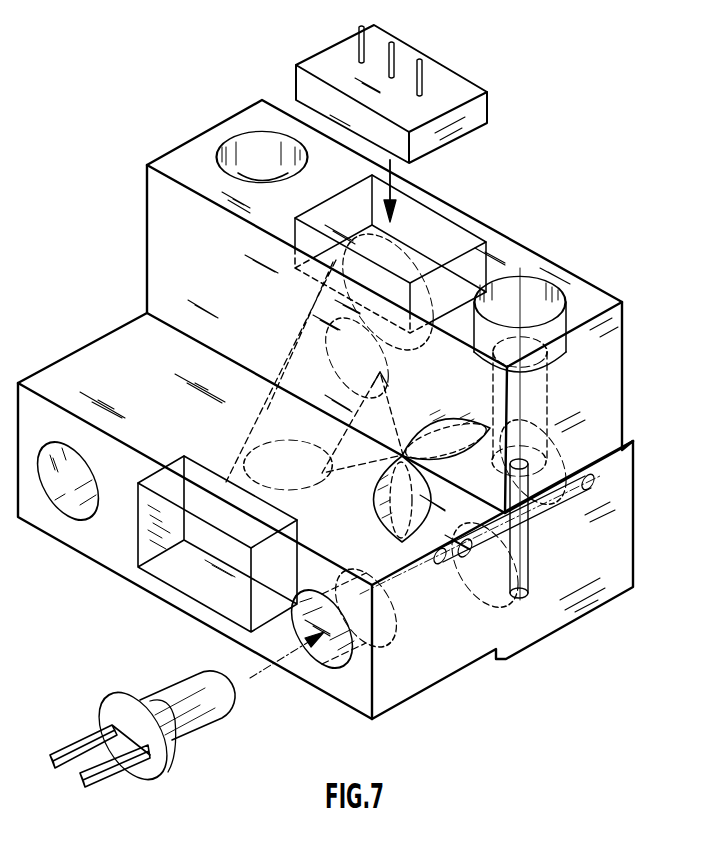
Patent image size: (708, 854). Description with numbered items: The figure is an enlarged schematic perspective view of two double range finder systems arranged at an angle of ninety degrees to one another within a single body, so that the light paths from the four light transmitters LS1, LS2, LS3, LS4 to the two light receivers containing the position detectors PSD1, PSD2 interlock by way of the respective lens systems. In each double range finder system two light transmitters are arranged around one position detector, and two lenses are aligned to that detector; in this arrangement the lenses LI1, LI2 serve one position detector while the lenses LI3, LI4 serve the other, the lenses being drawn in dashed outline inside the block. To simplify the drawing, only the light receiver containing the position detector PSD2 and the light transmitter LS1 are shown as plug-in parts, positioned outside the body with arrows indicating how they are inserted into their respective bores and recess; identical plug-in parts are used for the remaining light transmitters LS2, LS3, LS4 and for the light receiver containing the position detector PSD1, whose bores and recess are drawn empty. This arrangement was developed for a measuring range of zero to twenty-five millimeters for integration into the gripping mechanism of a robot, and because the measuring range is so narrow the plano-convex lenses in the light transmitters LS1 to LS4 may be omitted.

The light transmitter LS1 is at (183, 737).
The light transmitter LS2 is at (72, 490).
The light transmitter LS3 is at (541, 291).
The light transmitter LS4 is at (243, 150).
The position detector PSD1 is at (214, 585).
The position detector PSD2 is at (471, 116).
The lens LI1 is at (376, 476).
The lens LI2 is at (323, 397).
The lens LI3 is at (470, 424).
The lens LI4 is at (307, 417).